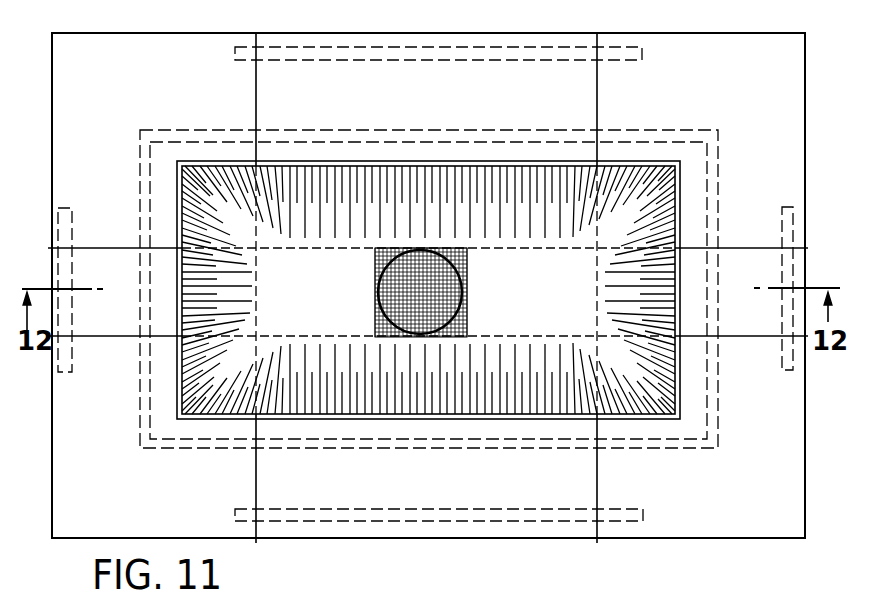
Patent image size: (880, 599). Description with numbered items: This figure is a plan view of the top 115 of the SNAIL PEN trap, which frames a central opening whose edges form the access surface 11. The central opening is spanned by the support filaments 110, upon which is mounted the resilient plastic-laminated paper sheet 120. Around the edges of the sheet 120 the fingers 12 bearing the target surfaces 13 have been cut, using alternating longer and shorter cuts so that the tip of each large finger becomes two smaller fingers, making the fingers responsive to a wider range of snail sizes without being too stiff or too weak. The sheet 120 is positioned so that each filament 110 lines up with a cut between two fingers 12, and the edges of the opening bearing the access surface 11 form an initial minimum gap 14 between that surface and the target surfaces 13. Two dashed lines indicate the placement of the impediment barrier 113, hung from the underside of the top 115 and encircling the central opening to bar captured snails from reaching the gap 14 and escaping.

The access surface 11 is at (283, 150).
The fingers 12 is at (316, 217).
The target surfaces 13 is at (392, 171).
The initial minimum gap 14 is at (487, 163).
The support filaments 110 is at (104, 338).
The impediment barrier 113 is at (718, 425).
The top 115 is at (723, 46).
The resilient plastic-laminated paper sheet 120 is at (465, 292).